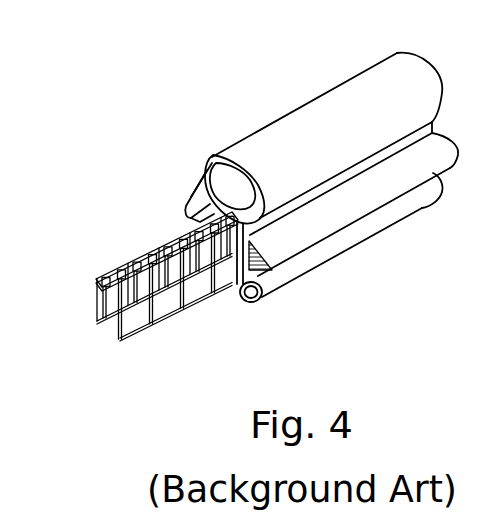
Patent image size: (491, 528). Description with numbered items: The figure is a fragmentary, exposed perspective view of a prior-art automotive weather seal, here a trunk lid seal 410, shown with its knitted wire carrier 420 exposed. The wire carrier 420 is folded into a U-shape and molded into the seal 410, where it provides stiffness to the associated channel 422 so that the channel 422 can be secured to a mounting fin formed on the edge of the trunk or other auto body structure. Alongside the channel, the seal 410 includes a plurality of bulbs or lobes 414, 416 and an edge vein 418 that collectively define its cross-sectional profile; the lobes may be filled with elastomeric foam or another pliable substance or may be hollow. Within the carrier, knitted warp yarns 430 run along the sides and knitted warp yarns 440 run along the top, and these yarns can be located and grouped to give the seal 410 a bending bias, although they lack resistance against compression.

The trunk lid seal 410 is at (315, 191).
The bulb 414 is at (352, 97).
The lobe 416 is at (317, 264).
The edge vein 418 is at (354, 219).
The knitted wire carrier 420 is at (132, 280).
The channel 422 is at (241, 302).
The knitted warp yarns 430 is at (98, 324).
The knitted warp yarns 440 is at (97, 293).